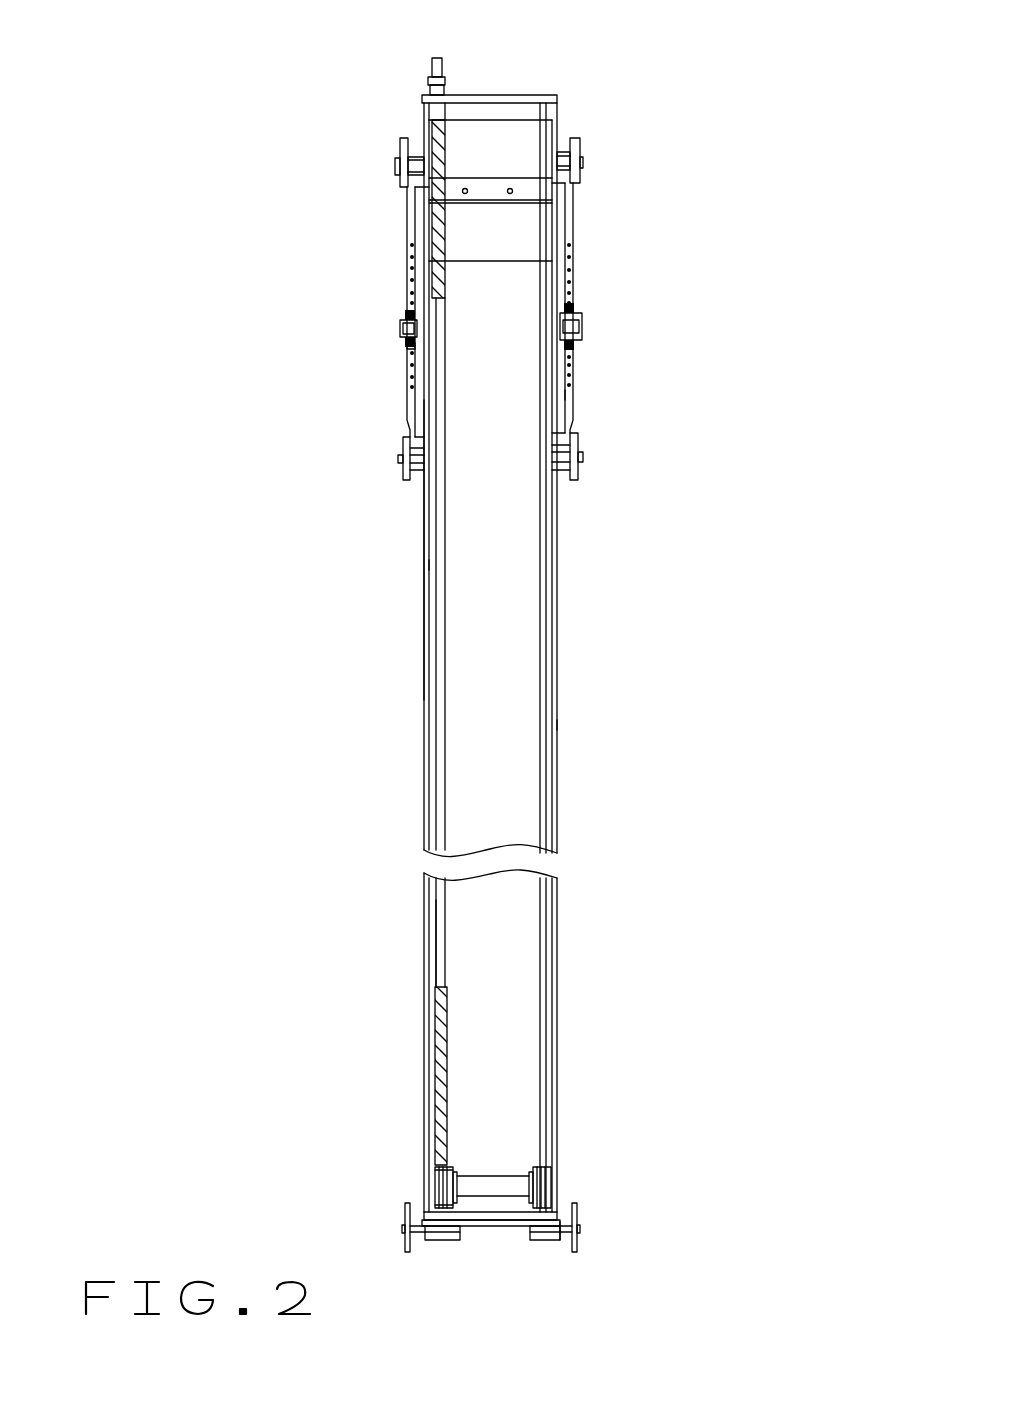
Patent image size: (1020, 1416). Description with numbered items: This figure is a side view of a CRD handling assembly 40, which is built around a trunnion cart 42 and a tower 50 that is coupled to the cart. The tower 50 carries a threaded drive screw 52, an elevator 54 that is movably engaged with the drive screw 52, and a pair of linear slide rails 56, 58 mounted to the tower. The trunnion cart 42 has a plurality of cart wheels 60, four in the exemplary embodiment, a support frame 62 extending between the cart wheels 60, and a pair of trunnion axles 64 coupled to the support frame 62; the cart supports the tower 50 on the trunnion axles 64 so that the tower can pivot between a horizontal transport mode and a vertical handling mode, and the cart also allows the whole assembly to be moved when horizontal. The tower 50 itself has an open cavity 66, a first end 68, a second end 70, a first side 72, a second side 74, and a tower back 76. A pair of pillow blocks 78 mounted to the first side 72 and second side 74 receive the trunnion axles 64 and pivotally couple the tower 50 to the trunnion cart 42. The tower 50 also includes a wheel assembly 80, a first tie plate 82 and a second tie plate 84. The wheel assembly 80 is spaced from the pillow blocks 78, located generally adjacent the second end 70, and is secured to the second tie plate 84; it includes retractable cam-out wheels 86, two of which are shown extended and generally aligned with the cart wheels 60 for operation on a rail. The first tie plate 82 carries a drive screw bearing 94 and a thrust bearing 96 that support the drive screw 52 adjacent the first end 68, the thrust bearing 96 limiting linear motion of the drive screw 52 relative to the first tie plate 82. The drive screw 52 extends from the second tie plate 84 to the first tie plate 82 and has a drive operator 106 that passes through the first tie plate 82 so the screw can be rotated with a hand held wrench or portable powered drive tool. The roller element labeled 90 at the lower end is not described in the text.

The CRD handling assembly 40 is at (647, 722).
The trunnion cart 42 is at (600, 396).
The tower 50 is at (410, 564).
The drive screw 52 is at (447, 1140).
The elevator 54 is at (515, 1158).
The linear slide rail 56 is at (537, 972).
The linear slide rail 58 is at (443, 965).
The cart wheels 60 is at (580, 473).
The support frame 62 is at (573, 222).
The trunnion axles 64 is at (400, 328).
The open cavity 66 is at (517, 635).
The first end 68 is at (582, 114).
The second end 70 is at (598, 1228).
The first side 72 is at (556, 768).
The second side 74 is at (424, 655).
The tower back 76 is at (470, 752).
The pillow blocks 78 is at (407, 347).
The wheel assembly 80 is at (590, 1254).
The first tie plate 82 is at (482, 95).
The second tie plate 84 is at (520, 1222).
The cam-out wheel 86 is at (405, 1252).
The roller 90 is at (432, 1200).
The drive screw bearing 94 is at (428, 116).
The thrust bearing 96 is at (428, 90).
The drive operator 106 is at (443, 62).